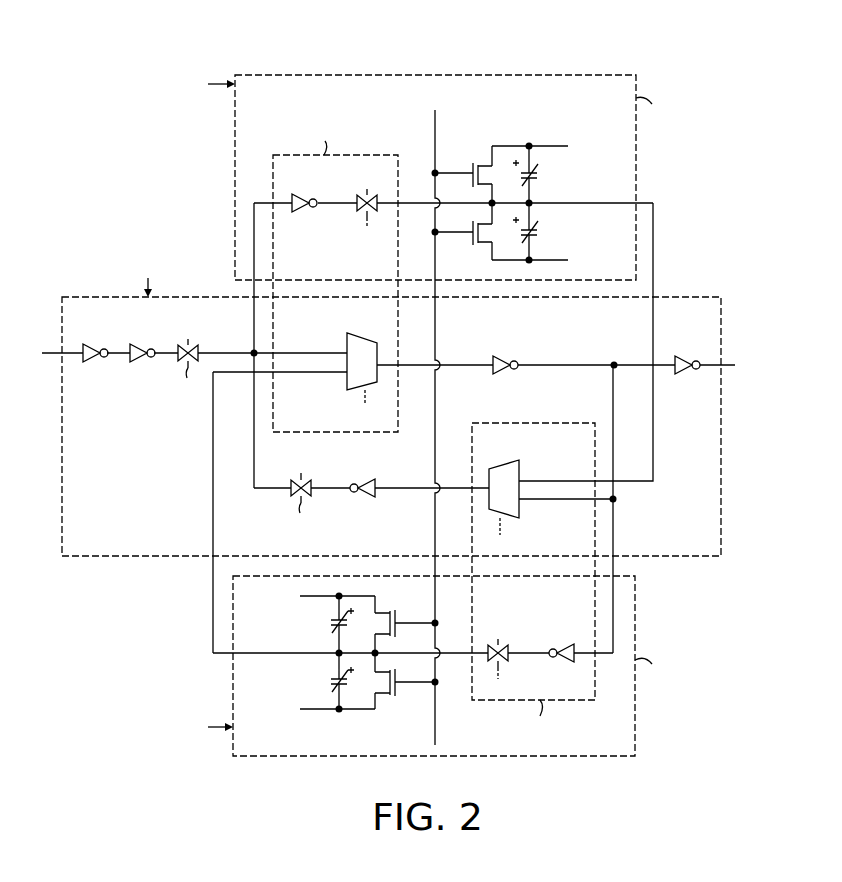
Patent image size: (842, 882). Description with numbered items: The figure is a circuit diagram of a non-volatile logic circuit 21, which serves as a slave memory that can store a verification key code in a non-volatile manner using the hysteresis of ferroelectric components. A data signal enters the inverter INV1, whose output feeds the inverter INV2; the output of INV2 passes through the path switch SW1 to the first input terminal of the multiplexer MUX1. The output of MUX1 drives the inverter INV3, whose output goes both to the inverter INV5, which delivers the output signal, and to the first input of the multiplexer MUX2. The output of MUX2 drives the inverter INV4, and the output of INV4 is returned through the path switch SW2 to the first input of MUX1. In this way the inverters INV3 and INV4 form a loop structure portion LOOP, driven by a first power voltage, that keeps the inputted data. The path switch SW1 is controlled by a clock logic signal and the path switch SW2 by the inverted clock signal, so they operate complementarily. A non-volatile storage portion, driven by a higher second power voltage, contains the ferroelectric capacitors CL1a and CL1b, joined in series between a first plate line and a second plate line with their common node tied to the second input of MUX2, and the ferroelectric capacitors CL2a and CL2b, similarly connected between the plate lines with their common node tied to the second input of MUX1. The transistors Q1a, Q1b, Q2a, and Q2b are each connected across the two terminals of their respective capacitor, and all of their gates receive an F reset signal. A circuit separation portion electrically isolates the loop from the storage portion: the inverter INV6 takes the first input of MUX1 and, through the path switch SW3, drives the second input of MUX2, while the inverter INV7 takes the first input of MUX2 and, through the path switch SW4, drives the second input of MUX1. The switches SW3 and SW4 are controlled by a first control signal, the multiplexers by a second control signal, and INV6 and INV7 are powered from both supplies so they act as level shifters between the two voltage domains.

The non-volatile logic circuit 21 is at (83, 59).
The loop structure portion LOOP is at (721, 512).
The inverter INV1 is at (91, 343).
The inverter INV2 is at (138, 343).
The path switch SW1 is at (188, 339).
The multiplexer MUX1 is at (368, 335).
The inverter INV3 is at (501, 355).
The inverter INV5 is at (684, 355).
The inverter INV6 is at (301, 194).
The path switch SW3 is at (367, 189).
The path switch SW2 is at (301, 473).
The inverter INV4 is at (370, 477).
The multiplexer MUX2 is at (500, 460).
The path switch SW4 is at (498, 639).
The inverter INV7 is at (566, 644).
The N-channel MOS field effect transistor Q1a is at (472, 165).
The N-channel MOS field effect transistor Q1b is at (472, 247).
The ferroelectric component CL1a is at (540, 176).
The ferroelectric component CL1b is at (540, 233).
The N-channel MOS field effect transistor Q2a is at (396, 610).
The N-channel MOS field effect transistor Q2b is at (396, 697).
The ferroelectric component CL2a is at (328, 623).
The ferroelectric component CL2b is at (328, 682).